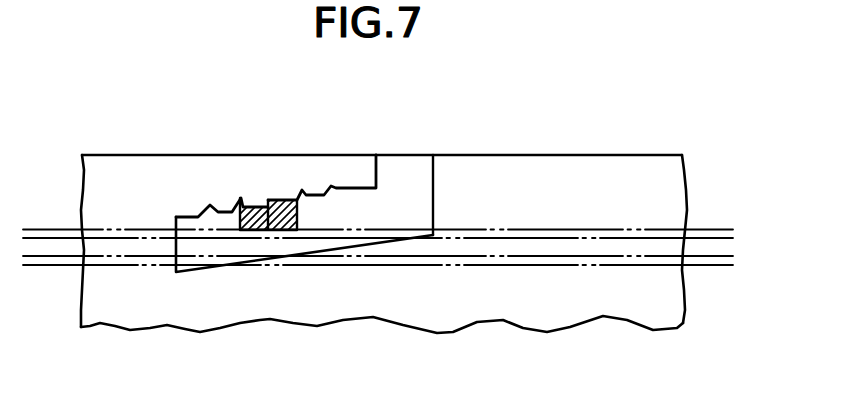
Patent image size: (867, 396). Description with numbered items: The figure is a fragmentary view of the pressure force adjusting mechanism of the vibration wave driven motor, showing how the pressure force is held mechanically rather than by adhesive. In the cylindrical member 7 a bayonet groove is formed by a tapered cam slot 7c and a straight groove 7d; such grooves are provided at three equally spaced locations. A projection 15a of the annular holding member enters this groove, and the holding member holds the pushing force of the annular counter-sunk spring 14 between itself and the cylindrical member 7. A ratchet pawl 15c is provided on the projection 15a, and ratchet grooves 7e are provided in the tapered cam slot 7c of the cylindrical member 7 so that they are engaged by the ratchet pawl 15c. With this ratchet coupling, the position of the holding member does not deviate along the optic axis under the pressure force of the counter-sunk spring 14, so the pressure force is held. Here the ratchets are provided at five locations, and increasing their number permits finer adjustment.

The cylindrical member 7 is at (573, 176).
The tapered cam slot 7c is at (223, 217).
The straight groove 7d is at (412, 177).
The ratchet groove 7e is at (266, 200).
The counter-sunk spring 14 is at (712, 229).
The projection 15a is at (257, 205).
The ratchet pawl 15c is at (271, 231).